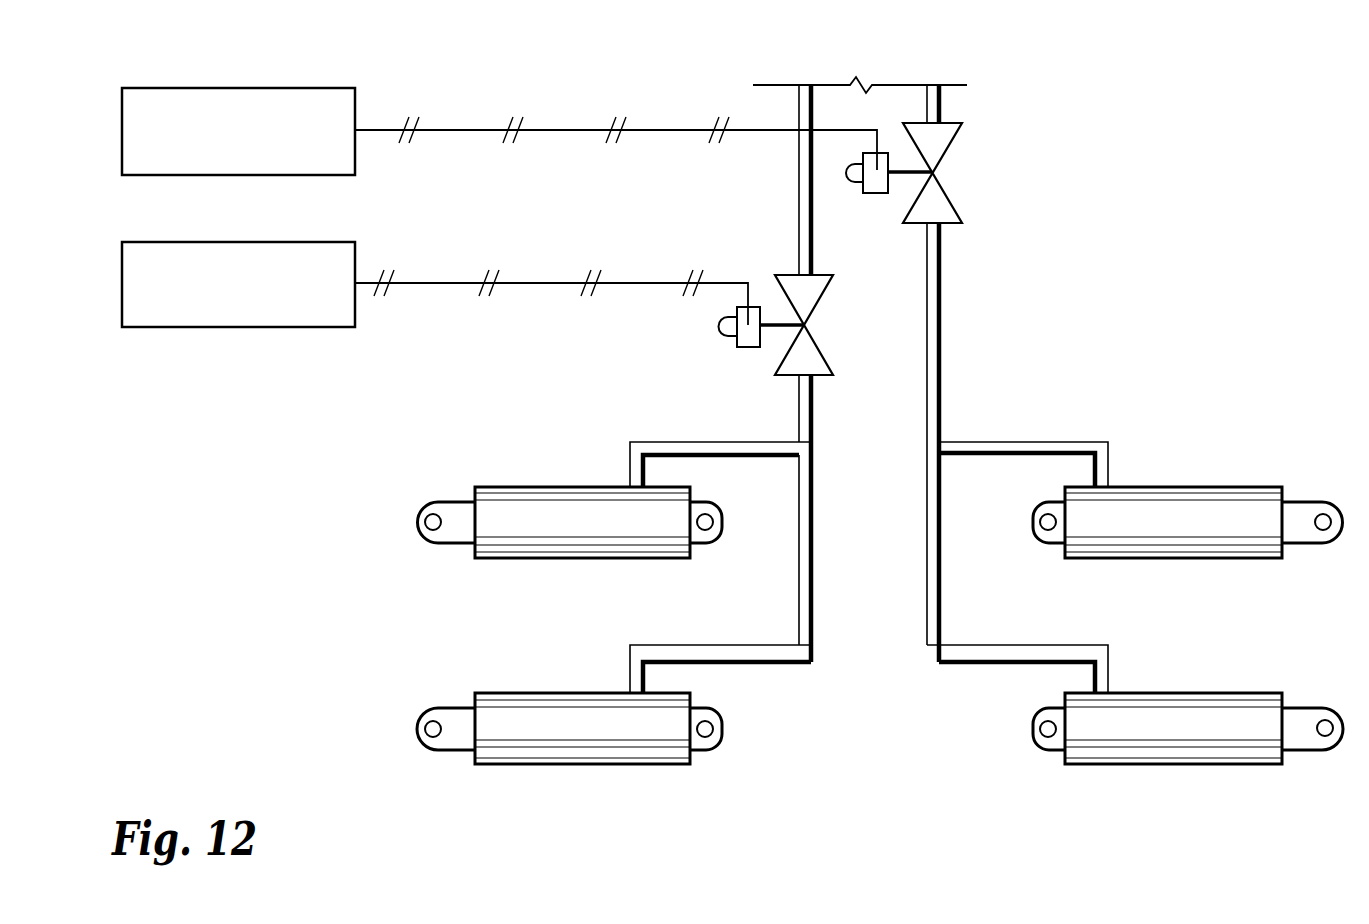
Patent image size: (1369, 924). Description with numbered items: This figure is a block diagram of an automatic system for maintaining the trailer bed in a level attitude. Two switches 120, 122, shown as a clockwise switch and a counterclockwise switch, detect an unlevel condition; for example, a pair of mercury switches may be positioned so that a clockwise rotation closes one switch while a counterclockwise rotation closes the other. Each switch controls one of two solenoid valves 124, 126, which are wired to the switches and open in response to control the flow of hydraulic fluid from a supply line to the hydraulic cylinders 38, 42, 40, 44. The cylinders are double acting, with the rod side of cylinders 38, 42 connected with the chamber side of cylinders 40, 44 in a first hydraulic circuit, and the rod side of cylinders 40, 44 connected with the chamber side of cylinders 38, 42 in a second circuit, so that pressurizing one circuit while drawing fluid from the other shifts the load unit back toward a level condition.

The switch 120 is at (162, 90).
The switch 122 is at (160, 318).
The solenoid valve 124 is at (932, 172).
The solenoid valve 126 is at (805, 325).
The cylinder 42 is at (522, 502).
The cylinder 44 is at (1173, 507).
The cylinder 38 is at (553, 754).
The cylinder 40 is at (1190, 752).